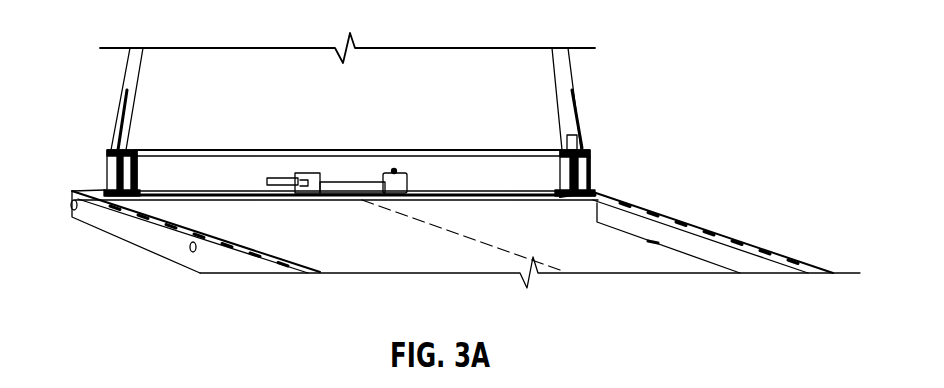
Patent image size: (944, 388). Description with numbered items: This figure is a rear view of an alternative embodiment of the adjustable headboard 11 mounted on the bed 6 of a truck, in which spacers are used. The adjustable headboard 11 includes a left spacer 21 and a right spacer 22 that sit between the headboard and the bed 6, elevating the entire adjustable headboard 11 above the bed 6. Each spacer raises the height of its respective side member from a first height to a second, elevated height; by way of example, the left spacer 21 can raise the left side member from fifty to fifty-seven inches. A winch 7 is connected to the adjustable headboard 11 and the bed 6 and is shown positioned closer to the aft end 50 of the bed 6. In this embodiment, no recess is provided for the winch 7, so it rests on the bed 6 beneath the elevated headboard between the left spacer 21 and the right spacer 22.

The adjustable headboard 11 is at (113, 115).
The left spacer 21 is at (105, 172).
The right spacer 22 is at (595, 178).
The winch 7 is at (348, 200).
The bed 6 is at (600, 222).
The aft end 50 is at (643, 275).